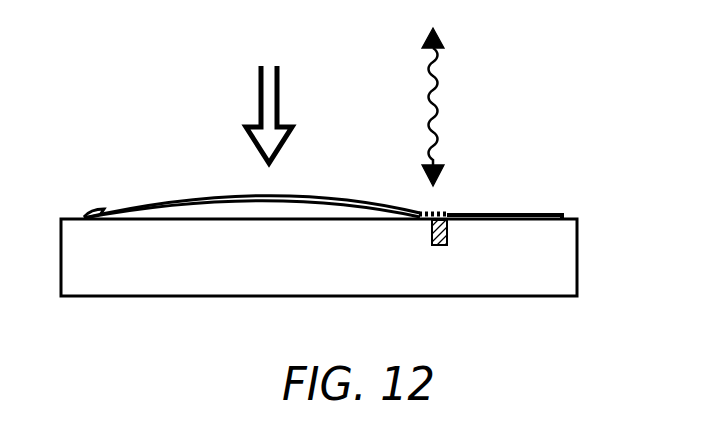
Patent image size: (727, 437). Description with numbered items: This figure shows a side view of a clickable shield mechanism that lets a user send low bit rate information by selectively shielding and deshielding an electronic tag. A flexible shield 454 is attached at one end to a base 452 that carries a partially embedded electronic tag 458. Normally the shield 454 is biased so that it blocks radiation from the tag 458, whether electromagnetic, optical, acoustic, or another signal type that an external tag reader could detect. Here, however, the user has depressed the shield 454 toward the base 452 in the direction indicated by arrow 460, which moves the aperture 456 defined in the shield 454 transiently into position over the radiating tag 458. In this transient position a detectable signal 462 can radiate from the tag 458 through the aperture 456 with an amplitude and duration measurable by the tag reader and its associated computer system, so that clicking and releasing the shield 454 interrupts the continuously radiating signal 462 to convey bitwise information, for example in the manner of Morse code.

The base 452 is at (577, 256).
The flexible shield 454 is at (140, 205).
The aperture 456 is at (441, 196).
The electronic tag 458 is at (438, 246).
The arrow 460 is at (257, 102).
The detectable signal 462 is at (436, 108).